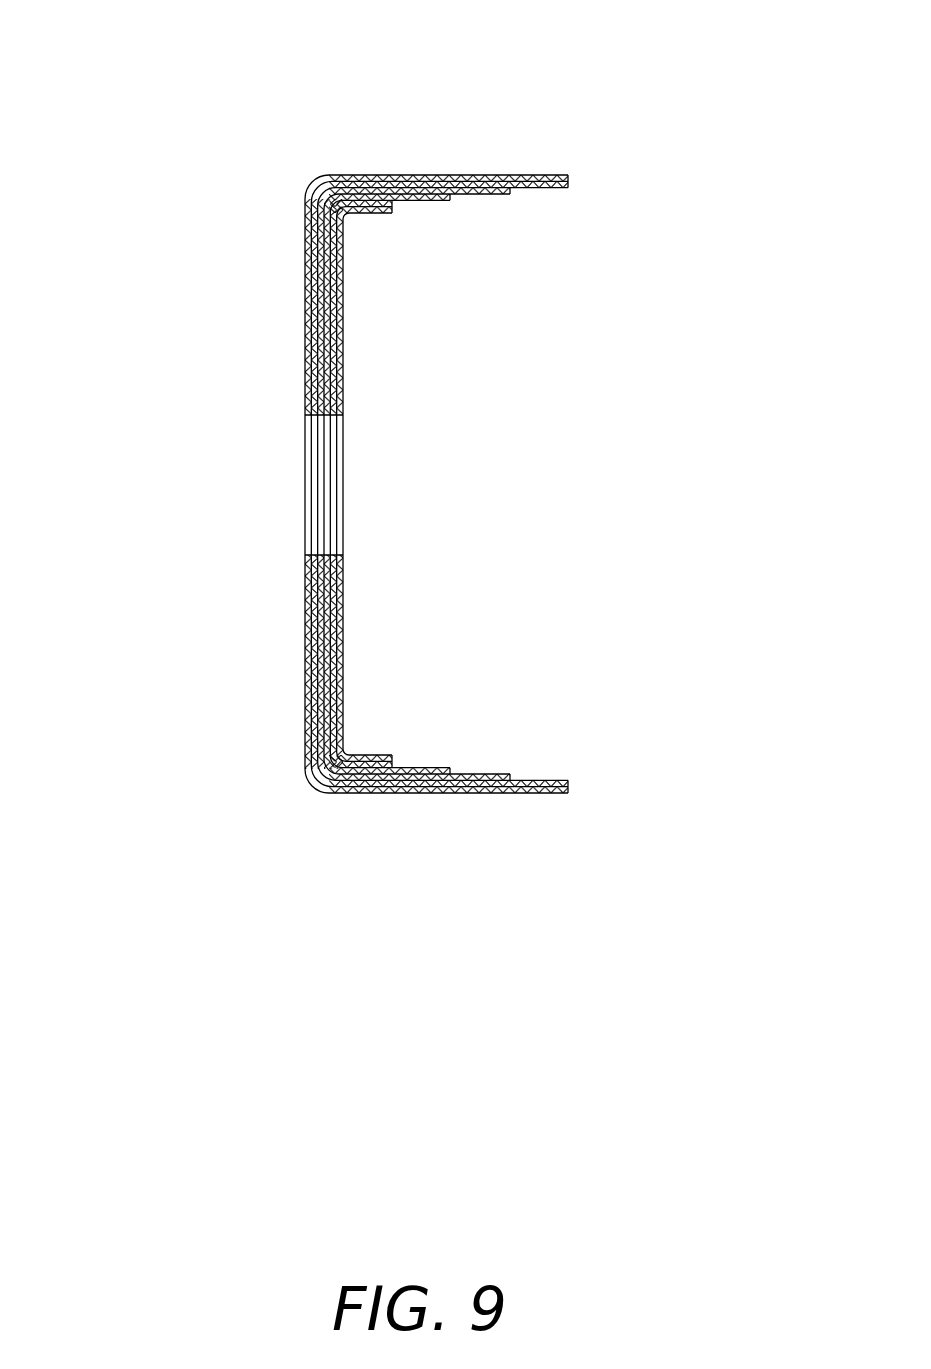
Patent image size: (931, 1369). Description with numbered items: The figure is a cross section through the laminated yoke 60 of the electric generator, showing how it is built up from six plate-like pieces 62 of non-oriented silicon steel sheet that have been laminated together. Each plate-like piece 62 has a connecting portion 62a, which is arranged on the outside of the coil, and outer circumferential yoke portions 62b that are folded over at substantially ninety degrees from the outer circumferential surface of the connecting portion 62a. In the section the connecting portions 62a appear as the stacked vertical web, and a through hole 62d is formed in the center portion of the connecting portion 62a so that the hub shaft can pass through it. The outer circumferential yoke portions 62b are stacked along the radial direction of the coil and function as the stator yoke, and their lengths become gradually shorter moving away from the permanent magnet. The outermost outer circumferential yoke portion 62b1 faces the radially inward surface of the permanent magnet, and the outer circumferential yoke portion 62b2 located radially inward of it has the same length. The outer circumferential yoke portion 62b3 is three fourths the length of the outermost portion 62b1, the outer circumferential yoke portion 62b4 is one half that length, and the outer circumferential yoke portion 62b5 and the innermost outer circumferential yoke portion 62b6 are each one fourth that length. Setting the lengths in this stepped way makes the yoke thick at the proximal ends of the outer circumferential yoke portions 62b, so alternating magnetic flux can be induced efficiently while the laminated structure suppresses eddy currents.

The laminated yoke 60 is at (286, 147).
The plate-like piece 62 is at (466, 174).
The connecting portion 62a is at (340, 743).
The outer circumferential yoke portion 62b is at (795, 1128).
The outermost outer circumferential yoke portion 62b1 is at (556, 791).
The outer circumferential yoke portion 62b2 is at (512, 786).
The outer circumferential yoke portion 62b3 is at (458, 780).
The outer circumferential yoke portion 62b4 is at (420, 772).
The outer circumferential yoke portion 62b5 is at (390, 768).
The innermost outer circumferential yoke portion 62b6 is at (368, 761).
The through hole 62d is at (305, 425).